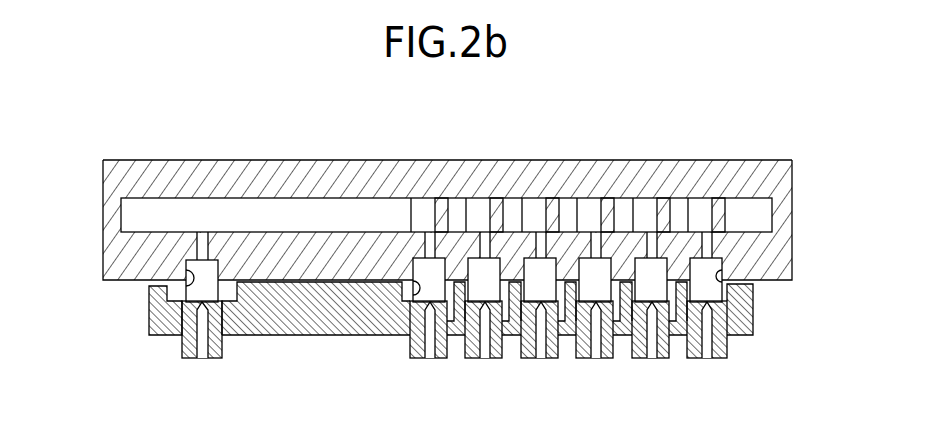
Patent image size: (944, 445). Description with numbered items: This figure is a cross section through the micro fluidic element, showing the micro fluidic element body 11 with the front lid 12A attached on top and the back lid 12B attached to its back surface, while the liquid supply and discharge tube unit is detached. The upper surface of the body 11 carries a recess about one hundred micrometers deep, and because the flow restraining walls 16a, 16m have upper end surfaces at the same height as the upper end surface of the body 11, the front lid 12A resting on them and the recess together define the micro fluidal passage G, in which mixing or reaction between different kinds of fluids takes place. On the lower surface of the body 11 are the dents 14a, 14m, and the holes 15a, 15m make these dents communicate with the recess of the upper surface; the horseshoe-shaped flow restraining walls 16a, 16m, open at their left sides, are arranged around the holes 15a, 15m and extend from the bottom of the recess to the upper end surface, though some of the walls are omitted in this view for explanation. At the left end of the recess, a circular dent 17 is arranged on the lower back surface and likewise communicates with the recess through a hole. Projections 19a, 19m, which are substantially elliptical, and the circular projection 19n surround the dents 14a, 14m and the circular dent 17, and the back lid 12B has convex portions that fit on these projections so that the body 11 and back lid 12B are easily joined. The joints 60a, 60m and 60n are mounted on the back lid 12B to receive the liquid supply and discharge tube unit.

The micro fluidic element body 11 is at (507, 161).
The front lid 12A is at (133, 161).
The back lid 12B is at (149, 312).
The micro fluidal passage G is at (247, 214).
The circular dent 17 is at (204, 266).
The dent 14m is at (417, 262).
The hole 15m is at (455, 198).
The flow restraining wall 16m is at (466, 212).
The dent 14a is at (703, 262).
The hole 15a is at (745, 198).
The flow restraining wall 16a is at (731, 216).
The projection 19n is at (187, 271).
The projection 19m is at (413, 296).
The projection 19a is at (723, 274).
The joint 60n is at (182, 345).
The joint 60m is at (437, 359).
The joint 60a is at (718, 359).